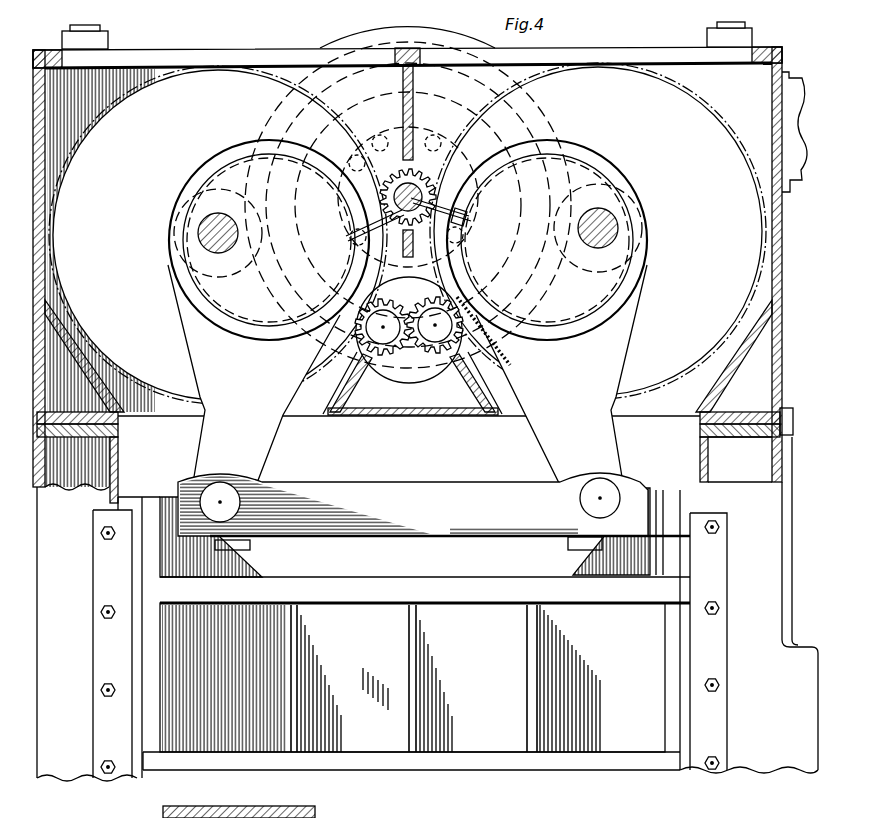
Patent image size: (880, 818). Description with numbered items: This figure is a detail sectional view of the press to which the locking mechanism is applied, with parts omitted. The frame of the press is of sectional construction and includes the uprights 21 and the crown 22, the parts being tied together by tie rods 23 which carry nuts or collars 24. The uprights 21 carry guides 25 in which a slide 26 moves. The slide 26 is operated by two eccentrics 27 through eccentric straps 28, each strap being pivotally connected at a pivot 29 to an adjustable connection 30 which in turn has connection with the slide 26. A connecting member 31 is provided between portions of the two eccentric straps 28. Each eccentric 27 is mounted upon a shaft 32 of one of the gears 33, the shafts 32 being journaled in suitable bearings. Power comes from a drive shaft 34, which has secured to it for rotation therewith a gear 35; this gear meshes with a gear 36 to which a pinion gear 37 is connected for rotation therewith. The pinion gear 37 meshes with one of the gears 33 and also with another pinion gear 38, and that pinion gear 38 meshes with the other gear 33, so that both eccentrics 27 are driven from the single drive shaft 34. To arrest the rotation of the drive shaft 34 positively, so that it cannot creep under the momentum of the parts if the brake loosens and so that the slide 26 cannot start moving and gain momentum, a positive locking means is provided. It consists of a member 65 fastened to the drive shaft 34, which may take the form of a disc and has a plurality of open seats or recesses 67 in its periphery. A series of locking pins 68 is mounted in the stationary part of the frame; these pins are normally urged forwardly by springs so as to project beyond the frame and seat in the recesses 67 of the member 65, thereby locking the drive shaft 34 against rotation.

The uprights 21 is at (102, 458).
The crown 22 is at (113, 402).
The tie rods 23 is at (100, 28).
The nuts or collars 24 is at (108, 43).
The guides 25 is at (120, 772).
The slide 26 is at (447, 764).
The eccentrics 27 is at (214, 302).
The eccentric straps 28 is at (183, 288).
The pivotal connection 29 is at (236, 495).
The adjustable connection 30 is at (258, 550).
The connecting member 31 is at (490, 490).
The shafts 32 is at (208, 228).
The gears 33 is at (161, 78).
The drive shaft 34 is at (425, 200).
The gear 35 is at (448, 215).
The gear 36 is at (392, 222).
The pinion gear 37 is at (440, 350).
The pinion gear 38 is at (383, 357).
The locking member 65 is at (350, 168).
The recesses 67 is at (366, 128).
The locking pins 68 is at (395, 128).